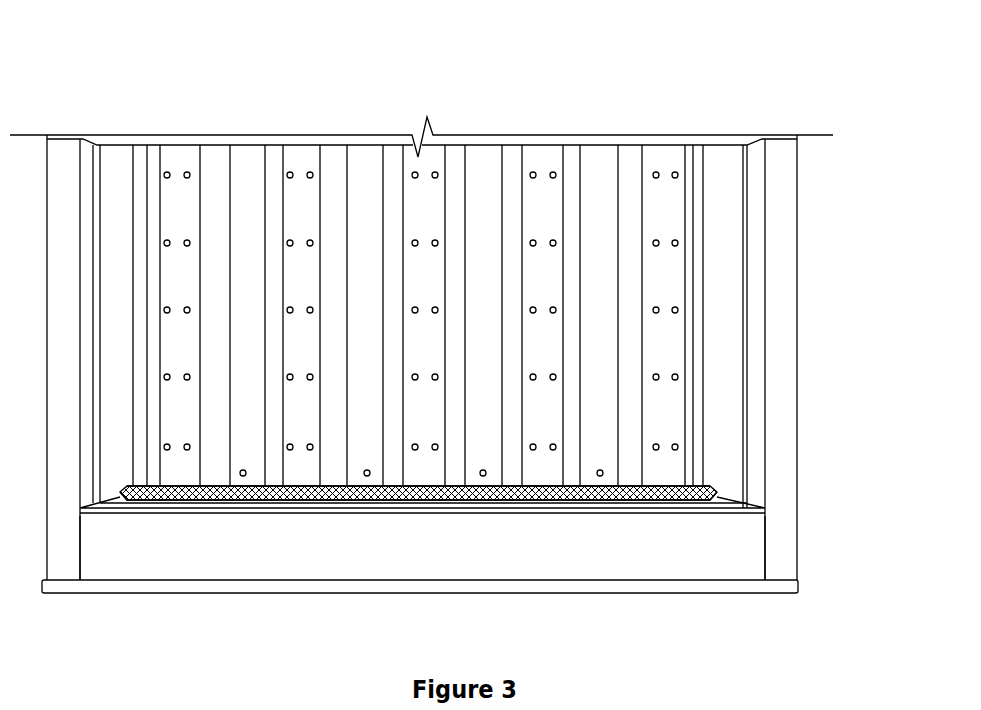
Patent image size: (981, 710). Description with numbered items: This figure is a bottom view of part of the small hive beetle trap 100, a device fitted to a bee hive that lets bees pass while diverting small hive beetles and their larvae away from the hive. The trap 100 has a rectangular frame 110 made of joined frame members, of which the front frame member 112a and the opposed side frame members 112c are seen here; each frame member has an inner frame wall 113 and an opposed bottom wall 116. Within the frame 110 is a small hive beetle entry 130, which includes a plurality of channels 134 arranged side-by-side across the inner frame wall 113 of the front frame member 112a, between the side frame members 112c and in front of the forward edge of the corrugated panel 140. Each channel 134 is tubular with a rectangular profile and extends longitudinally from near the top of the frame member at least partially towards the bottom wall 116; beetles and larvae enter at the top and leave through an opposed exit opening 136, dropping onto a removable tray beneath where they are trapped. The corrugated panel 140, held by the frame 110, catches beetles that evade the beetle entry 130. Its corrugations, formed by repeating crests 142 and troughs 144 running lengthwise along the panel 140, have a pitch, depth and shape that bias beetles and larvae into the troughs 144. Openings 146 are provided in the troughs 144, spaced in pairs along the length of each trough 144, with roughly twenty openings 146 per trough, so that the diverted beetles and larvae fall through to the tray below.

The small hive beetle trap 100 is at (720, 92).
The rectangular frame 110 is at (793, 170).
The front frame member 112a is at (645, 591).
The side frame member 112c is at (797, 258).
The inner frame wall 113 is at (615, 508).
The bottom wall 116 is at (644, 528).
The small hive beetle entry 130 is at (156, 502).
The channels 134 is at (270, 502).
The exit opening 136 is at (390, 493).
The corrugated panel 140 is at (673, 200).
The crests 142 is at (480, 203).
The troughs 144 is at (417, 195).
The openings 146 is at (290, 172).